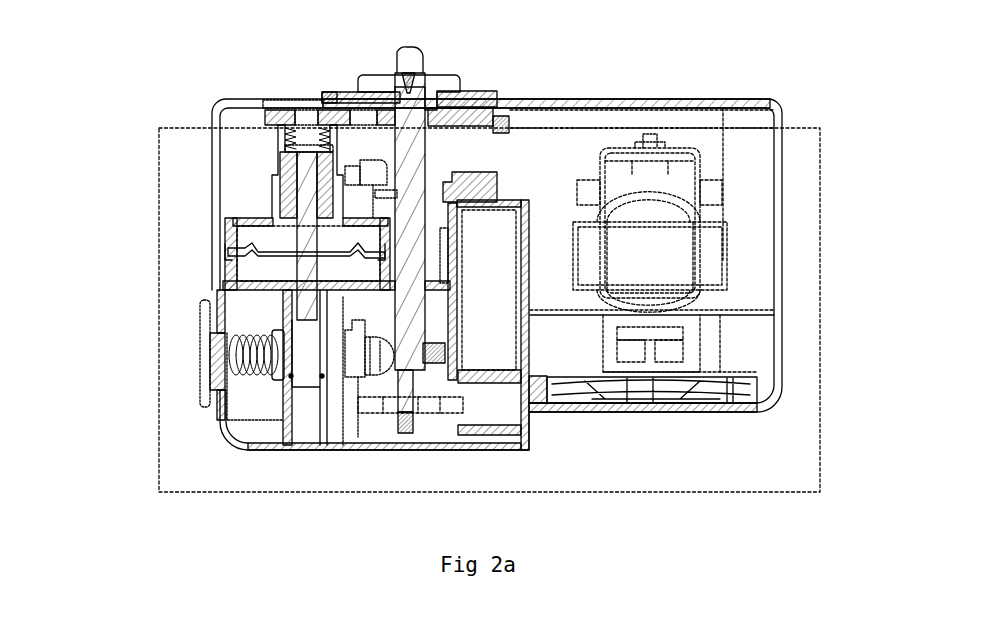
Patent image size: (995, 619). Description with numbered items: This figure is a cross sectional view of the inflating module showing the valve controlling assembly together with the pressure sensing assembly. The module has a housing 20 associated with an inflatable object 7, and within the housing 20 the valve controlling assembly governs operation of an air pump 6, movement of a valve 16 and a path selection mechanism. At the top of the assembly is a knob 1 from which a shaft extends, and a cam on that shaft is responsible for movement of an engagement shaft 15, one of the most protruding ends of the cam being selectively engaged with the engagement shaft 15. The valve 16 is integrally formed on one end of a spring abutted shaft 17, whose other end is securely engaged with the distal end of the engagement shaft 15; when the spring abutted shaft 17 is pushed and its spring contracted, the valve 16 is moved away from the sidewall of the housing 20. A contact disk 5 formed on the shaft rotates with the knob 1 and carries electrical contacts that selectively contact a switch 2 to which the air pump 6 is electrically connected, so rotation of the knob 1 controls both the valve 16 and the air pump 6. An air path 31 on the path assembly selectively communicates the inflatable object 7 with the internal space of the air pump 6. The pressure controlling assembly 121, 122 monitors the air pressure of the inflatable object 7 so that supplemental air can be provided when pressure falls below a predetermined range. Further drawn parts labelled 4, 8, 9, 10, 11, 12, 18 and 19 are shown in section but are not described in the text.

The knob 1 is at (445, 83).
The switch 2 is at (482, 180).
The actuating element 4 is at (359, 168).
The contact disk 5 is at (390, 185).
The air pump 6 is at (668, 130).
The inflatable object 7 is at (800, 355).
The sealing plate 8 is at (352, 93).
The bushing 9 is at (478, 113).
The cover plate 10 is at (270, 112).
The spring 11 is at (286, 156).
The cylinder 12 is at (306, 166).
The engagement shaft 15 is at (335, 352).
The valve 16 is at (208, 327).
The spring abutted shaft 17 is at (247, 360).
The seal 18 is at (502, 115).
The top cover 19 is at (653, 98).
The housing 20 is at (784, 117).
The air path 31 is at (505, 408).
The pressure controlling assembly 121 is at (247, 249).
The pressure controlling assembly 122 is at (253, 232).